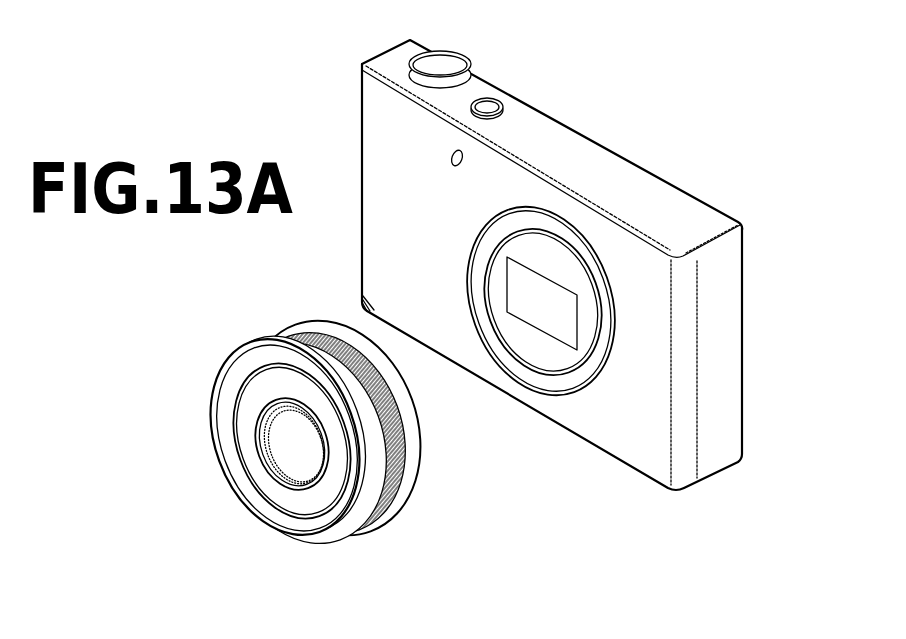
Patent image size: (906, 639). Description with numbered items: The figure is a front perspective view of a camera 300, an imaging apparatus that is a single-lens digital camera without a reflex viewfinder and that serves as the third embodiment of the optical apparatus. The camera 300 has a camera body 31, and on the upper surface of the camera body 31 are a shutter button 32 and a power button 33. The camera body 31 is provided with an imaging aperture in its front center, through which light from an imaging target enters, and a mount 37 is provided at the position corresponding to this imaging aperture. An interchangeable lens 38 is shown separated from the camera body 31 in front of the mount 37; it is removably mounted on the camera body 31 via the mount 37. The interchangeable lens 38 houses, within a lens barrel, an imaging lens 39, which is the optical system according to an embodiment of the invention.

The camera 300 is at (584, 245).
The camera body 31 is at (733, 316).
The shutter button 32 is at (447, 58).
The power button 33 is at (489, 100).
The mount 37 is at (563, 380).
The interchangeable lens 38 is at (317, 434).
The imaging lens 39 is at (297, 466).